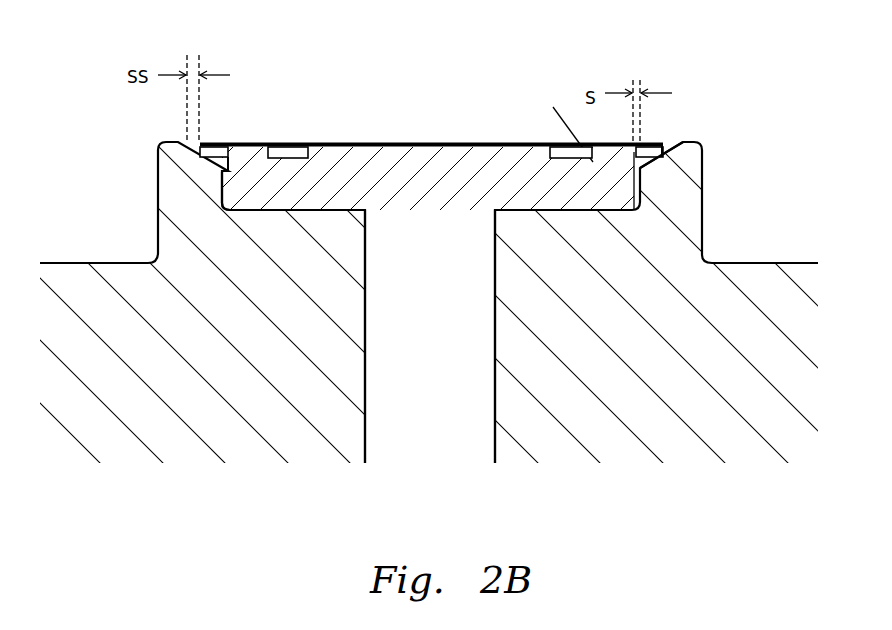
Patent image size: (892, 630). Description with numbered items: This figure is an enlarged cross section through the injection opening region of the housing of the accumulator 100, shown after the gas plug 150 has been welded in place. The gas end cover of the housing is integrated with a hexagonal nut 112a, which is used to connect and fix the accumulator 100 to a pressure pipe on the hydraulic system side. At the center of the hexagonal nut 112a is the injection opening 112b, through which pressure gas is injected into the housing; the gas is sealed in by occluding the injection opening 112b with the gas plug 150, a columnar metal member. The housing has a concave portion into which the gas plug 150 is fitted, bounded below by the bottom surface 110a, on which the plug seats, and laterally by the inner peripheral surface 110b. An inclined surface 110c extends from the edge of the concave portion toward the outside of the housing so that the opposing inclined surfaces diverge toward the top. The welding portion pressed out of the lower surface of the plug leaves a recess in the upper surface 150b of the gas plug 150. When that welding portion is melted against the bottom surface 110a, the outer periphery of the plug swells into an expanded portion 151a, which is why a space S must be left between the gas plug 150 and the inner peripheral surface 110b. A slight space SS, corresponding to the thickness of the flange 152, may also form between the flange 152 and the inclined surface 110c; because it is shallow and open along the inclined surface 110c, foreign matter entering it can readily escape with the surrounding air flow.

The accumulator 100 is at (755, 115).
The bottom surface of the concave portion 110a is at (318, 204).
The inner peripheral surface of the concave portion 110b is at (224, 186).
The inclined surface 110c is at (667, 147).
The hexagonal nut 112a is at (175, 177).
The injection opening 112b is at (366, 431).
The gas plug 150 is at (465, 162).
The upper surface of the gas plug 150b is at (508, 143).
The expanded portion 151a is at (636, 192).
The flange 152 is at (207, 146).